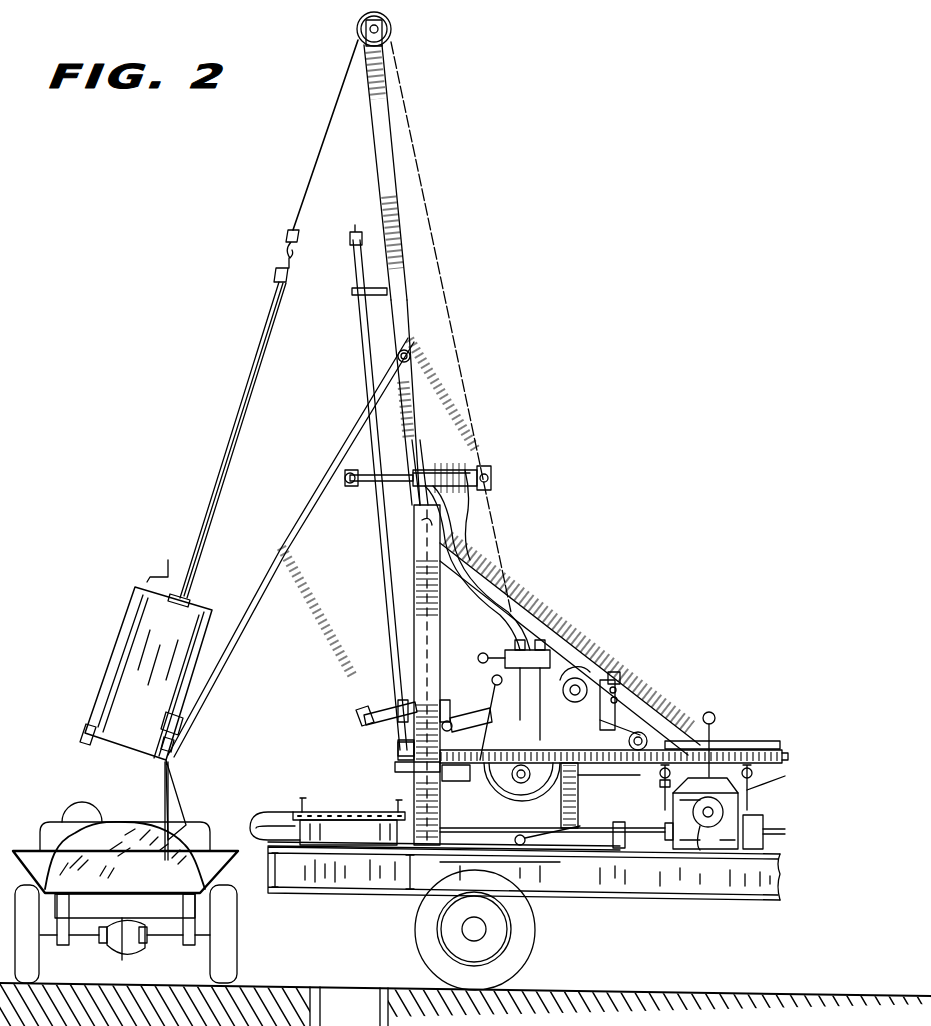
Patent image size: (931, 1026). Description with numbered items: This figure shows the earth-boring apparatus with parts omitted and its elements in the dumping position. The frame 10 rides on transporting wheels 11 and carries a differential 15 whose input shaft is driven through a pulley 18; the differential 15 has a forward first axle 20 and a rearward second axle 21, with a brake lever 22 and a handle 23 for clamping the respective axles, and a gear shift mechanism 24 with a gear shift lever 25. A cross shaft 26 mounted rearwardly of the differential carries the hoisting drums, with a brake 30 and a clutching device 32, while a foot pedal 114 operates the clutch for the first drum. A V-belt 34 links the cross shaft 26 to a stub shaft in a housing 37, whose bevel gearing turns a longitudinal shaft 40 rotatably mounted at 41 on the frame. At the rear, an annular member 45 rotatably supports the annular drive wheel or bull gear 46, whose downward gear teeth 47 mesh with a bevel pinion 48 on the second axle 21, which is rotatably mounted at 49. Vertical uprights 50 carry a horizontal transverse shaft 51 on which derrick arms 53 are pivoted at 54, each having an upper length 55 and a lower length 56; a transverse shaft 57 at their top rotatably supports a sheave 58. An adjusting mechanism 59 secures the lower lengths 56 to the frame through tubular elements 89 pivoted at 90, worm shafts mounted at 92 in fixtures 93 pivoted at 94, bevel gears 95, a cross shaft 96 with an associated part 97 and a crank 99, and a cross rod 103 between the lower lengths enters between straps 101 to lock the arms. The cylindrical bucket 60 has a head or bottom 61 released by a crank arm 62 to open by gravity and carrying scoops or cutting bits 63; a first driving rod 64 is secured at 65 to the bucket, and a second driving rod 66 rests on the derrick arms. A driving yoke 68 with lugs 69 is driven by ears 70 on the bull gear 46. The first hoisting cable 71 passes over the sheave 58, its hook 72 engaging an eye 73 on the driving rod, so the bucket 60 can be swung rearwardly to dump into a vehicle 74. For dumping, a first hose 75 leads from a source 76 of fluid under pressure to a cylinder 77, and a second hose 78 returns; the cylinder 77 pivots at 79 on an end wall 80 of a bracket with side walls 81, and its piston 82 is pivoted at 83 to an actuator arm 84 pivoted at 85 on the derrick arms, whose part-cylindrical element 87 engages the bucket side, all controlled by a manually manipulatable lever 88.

The frame 10 is at (664, 900).
The transporting wheels 11 is at (530, 932).
The differential 15 is at (724, 850).
The pulley 18 is at (720, 830).
The first axle 20 is at (760, 826).
The second axle 21 is at (608, 836).
The brake lever 22 is at (748, 790).
The handle 23 is at (662, 800).
The gear shift mechanism 24 is at (660, 790).
The gear shift lever 25 is at (712, 714).
The cross shaft 26 is at (523, 790).
The brake 30 is at (512, 808).
The device 32 is at (494, 690).
The V-belt 34 is at (598, 778).
The housing 37 is at (640, 718).
The shaft 40 is at (720, 740).
The rotatable mounting 41 is at (780, 738).
The annular member 45 is at (375, 840).
The annular drive wheel or bull gear 46 is at (360, 814).
The gear teeth 47 is at (315, 838).
The bevel pinion 48 is at (490, 800).
The rotatable mounting 49 is at (628, 822).
The vertical uprights 50 is at (438, 640).
The horizontal transverse shaft 51 is at (420, 545).
The derrick arms 53 is at (408, 404).
The pivotal support 54 is at (465, 552).
The upper length 55 is at (380, 186).
The lower length 56 is at (450, 700).
The horizontal transverse shaft 57 is at (385, 28).
The sheave 58 is at (358, 22).
The adjusting mechanism 59 is at (618, 680).
The cylindrical bucket 60 is at (112, 672).
The head or bottom 61 is at (164, 792).
The crank arm 62 is at (160, 558).
The scoops or cutting bits 63 is at (185, 798).
The first driving rod 64 is at (205, 490).
The securing point 65 is at (185, 590).
The second driving rod 66 is at (366, 365).
The driving yoke 68 is at (390, 700).
The lugs 69 is at (360, 720).
The ears 70 is at (292, 790).
The first hoisting cable 71 is at (446, 290).
The hook 72 is at (292, 252).
The eye 73 is at (278, 268).
The vehicle 74 is at (212, 862).
The first hose 75 is at (485, 512).
The source of fluid under pressure 76 is at (550, 648).
The cylinder 77 is at (432, 468).
The second hose 78 is at (490, 534).
The pivotal support 79 is at (488, 468).
The end wall 80 is at (488, 478).
The side walls 81 is at (462, 468).
The piston 82 is at (375, 488).
The pivotal connection 83 is at (350, 482).
The actuator arm 84 is at (295, 552).
The pivotal connection 85 is at (405, 358).
The part-cylindrical element 87 is at (190, 725).
The manually manipulatable lever 88 is at (476, 658).
The tubular elements 89 is at (482, 720).
The pivotal securement 90 is at (455, 728).
The rotatable mounting 92 is at (578, 700).
The fixture 93 is at (602, 680).
The pivotal securement 94 is at (618, 686).
The bevel gears 95 is at (570, 780).
The cross shaft 96 is at (585, 676).
The pin 97 is at (615, 696).
The crank 99 is at (618, 712).
The straps 101 is at (398, 780).
The cross rod 103 is at (455, 780).
The foot pedal 114 is at (550, 850).